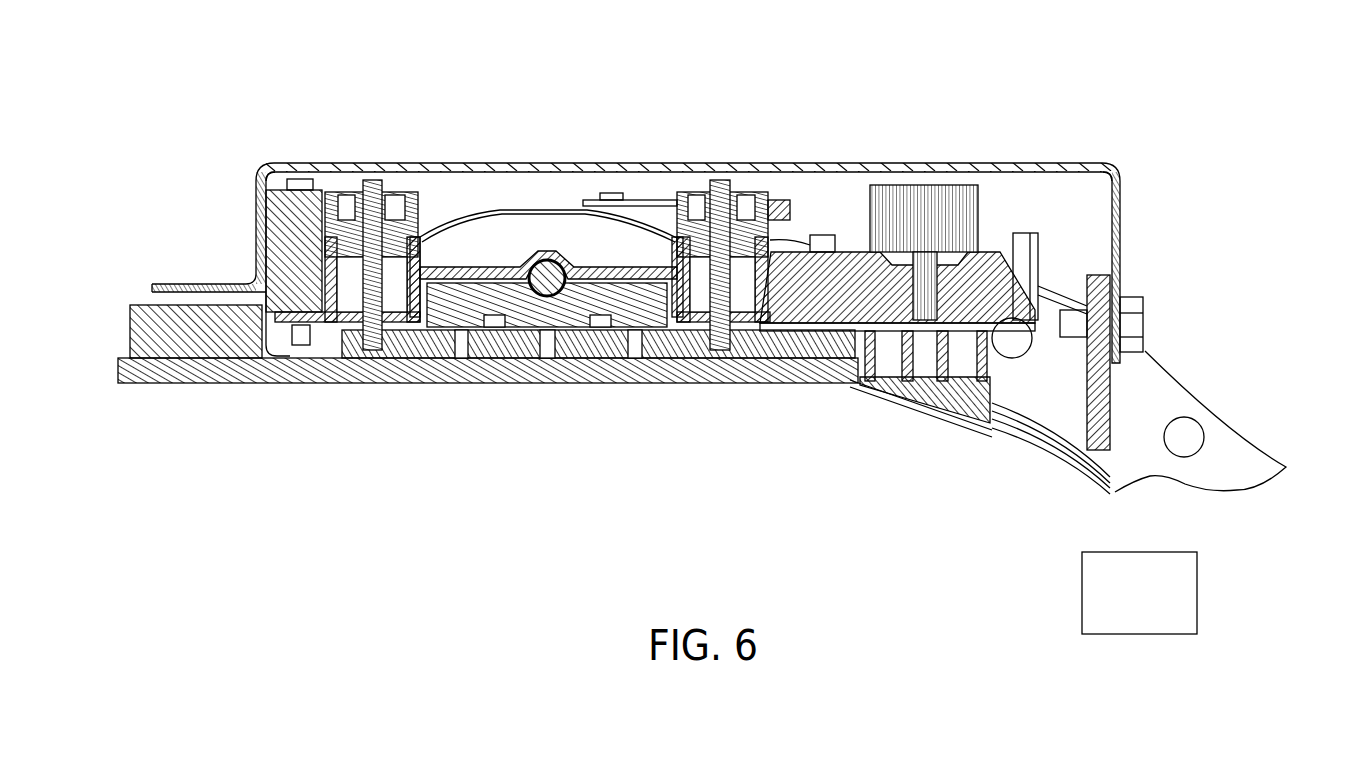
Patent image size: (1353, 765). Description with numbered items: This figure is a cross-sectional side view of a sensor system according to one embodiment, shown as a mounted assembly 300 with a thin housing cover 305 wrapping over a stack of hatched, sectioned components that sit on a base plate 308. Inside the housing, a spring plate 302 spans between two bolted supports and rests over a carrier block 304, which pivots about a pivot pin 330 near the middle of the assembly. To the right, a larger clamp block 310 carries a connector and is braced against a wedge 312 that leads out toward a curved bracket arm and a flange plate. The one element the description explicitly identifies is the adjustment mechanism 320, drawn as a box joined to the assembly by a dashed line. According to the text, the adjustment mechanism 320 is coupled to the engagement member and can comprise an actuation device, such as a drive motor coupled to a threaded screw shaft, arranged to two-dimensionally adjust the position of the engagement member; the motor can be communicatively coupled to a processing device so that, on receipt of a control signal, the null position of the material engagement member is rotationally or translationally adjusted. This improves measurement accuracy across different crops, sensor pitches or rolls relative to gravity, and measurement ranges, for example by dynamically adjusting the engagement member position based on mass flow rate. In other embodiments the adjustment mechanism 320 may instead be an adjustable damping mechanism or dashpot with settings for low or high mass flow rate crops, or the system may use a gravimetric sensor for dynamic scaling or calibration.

The clamping assembly 300 is at (278, 526).
The spring plate 302 is at (575, 238).
The carrier block 304 is at (585, 310).
The housing cover 305 is at (278, 208).
The base plate 308 is at (190, 383).
The clamp block 310 is at (830, 283).
The wedge 312 is at (943, 415).
The adjustment mechanism 320 is at (993, 383).
The pivot pin 330 is at (546, 256).